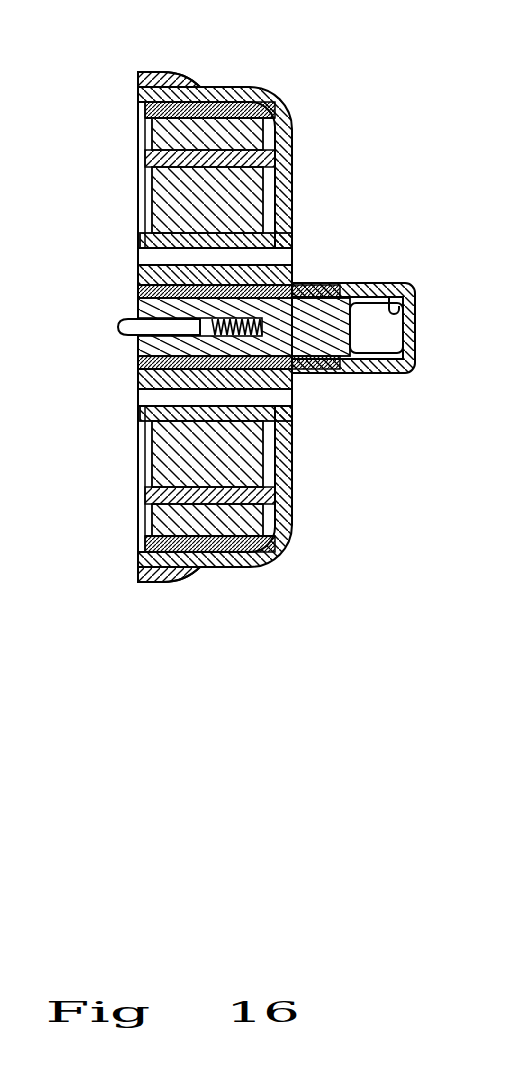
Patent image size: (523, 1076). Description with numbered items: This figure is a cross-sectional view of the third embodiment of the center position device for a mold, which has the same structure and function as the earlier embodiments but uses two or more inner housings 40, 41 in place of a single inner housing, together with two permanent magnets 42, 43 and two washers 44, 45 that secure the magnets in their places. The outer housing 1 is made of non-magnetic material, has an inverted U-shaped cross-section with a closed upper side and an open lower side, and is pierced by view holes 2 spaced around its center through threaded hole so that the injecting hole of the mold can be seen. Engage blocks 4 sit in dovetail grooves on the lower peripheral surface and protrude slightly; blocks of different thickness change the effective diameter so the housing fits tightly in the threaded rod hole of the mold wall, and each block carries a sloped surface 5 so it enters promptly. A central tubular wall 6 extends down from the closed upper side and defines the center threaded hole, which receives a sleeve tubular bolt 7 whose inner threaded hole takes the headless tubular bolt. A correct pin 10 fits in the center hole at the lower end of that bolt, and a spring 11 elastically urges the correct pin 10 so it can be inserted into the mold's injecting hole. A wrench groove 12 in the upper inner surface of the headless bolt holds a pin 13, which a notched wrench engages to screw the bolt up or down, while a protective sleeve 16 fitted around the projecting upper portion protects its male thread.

The outer housing 1 is at (297, 150).
The view holes 2 is at (138, 258).
The engage blocks 4 is at (162, 72).
The sloped surface 5 is at (192, 77).
The central tubular wall 6 is at (292, 267).
The sleeve tubular bolt 7 is at (298, 377).
The correct pin 10 is at (122, 333).
The spring 11 is at (138, 307).
The wrench groove 12 is at (390, 328).
The pin 13 is at (417, 300).
The protective sleeve 16 is at (396, 283).
The inner housing 40 is at (138, 106).
The inner housing 41 is at (138, 160).
The permanent magnet 42 is at (258, 107).
The permanent magnet 43 is at (267, 197).
The washer 44 is at (138, 130).
The washer 45 is at (140, 205).